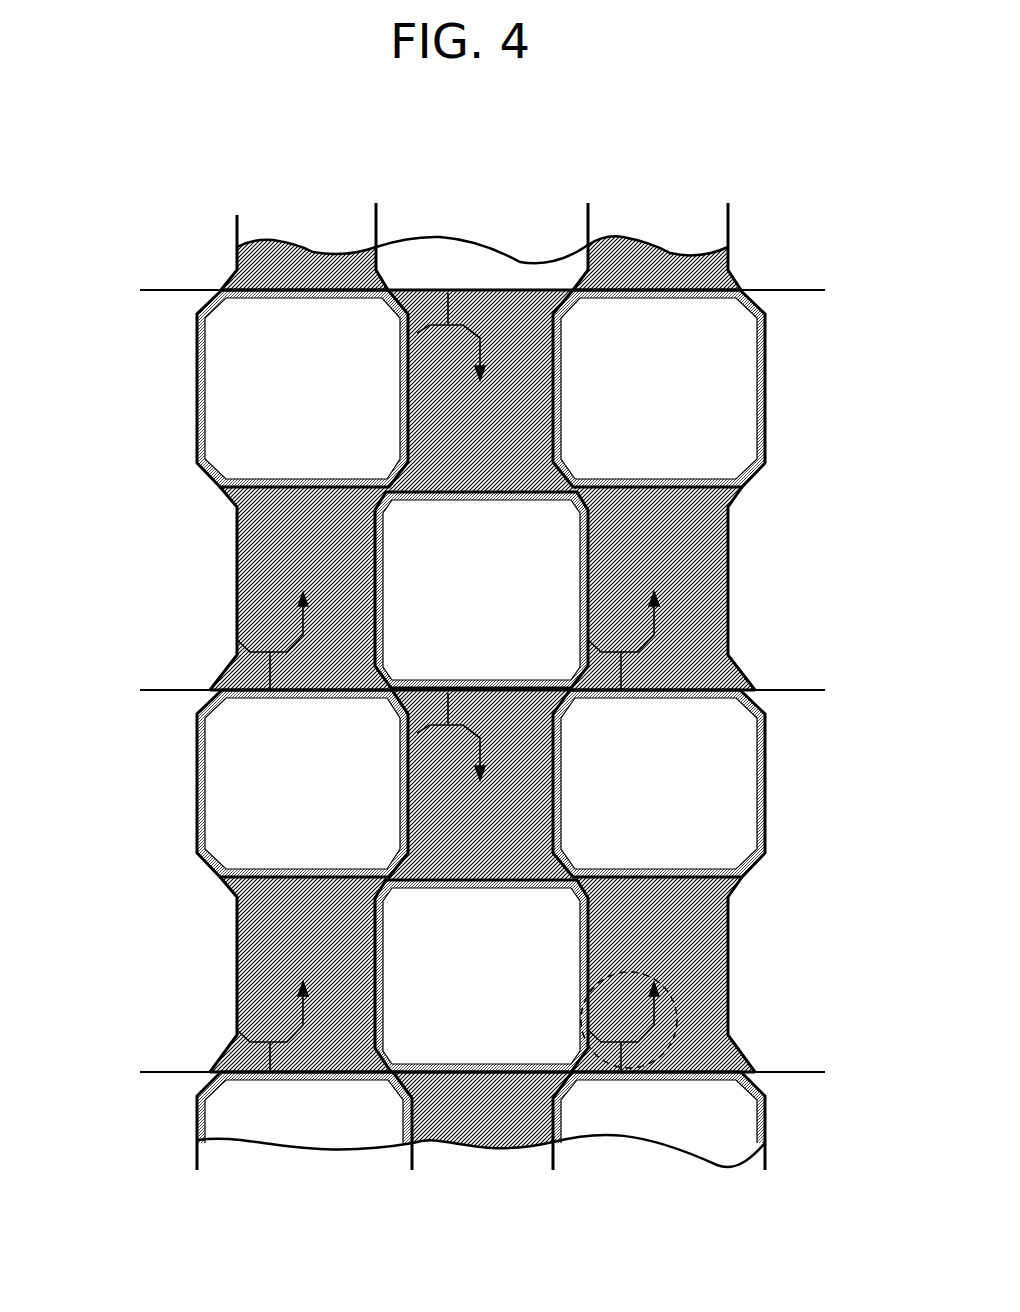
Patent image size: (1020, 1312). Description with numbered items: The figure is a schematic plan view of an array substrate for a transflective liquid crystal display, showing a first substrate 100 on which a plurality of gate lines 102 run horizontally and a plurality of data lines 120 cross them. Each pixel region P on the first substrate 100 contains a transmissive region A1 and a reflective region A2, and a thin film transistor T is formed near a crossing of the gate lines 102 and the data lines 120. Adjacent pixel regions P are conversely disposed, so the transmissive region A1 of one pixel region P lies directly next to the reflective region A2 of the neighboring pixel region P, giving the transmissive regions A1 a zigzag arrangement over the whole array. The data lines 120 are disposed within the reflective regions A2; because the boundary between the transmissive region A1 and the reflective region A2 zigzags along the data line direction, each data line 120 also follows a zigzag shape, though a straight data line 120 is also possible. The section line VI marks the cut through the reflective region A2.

The first substrate 100 is at (848, 1156).
The gate lines 102 is at (805, 290).
The data lines 120 is at (240, 226).
The pixel region P is at (95, 533).
The transmissive region A1 is at (243, 392).
The reflective region A2 is at (269, 536).
The thin film transistor T is at (575, 1017).
The section line VI- VI is at (556, 822).